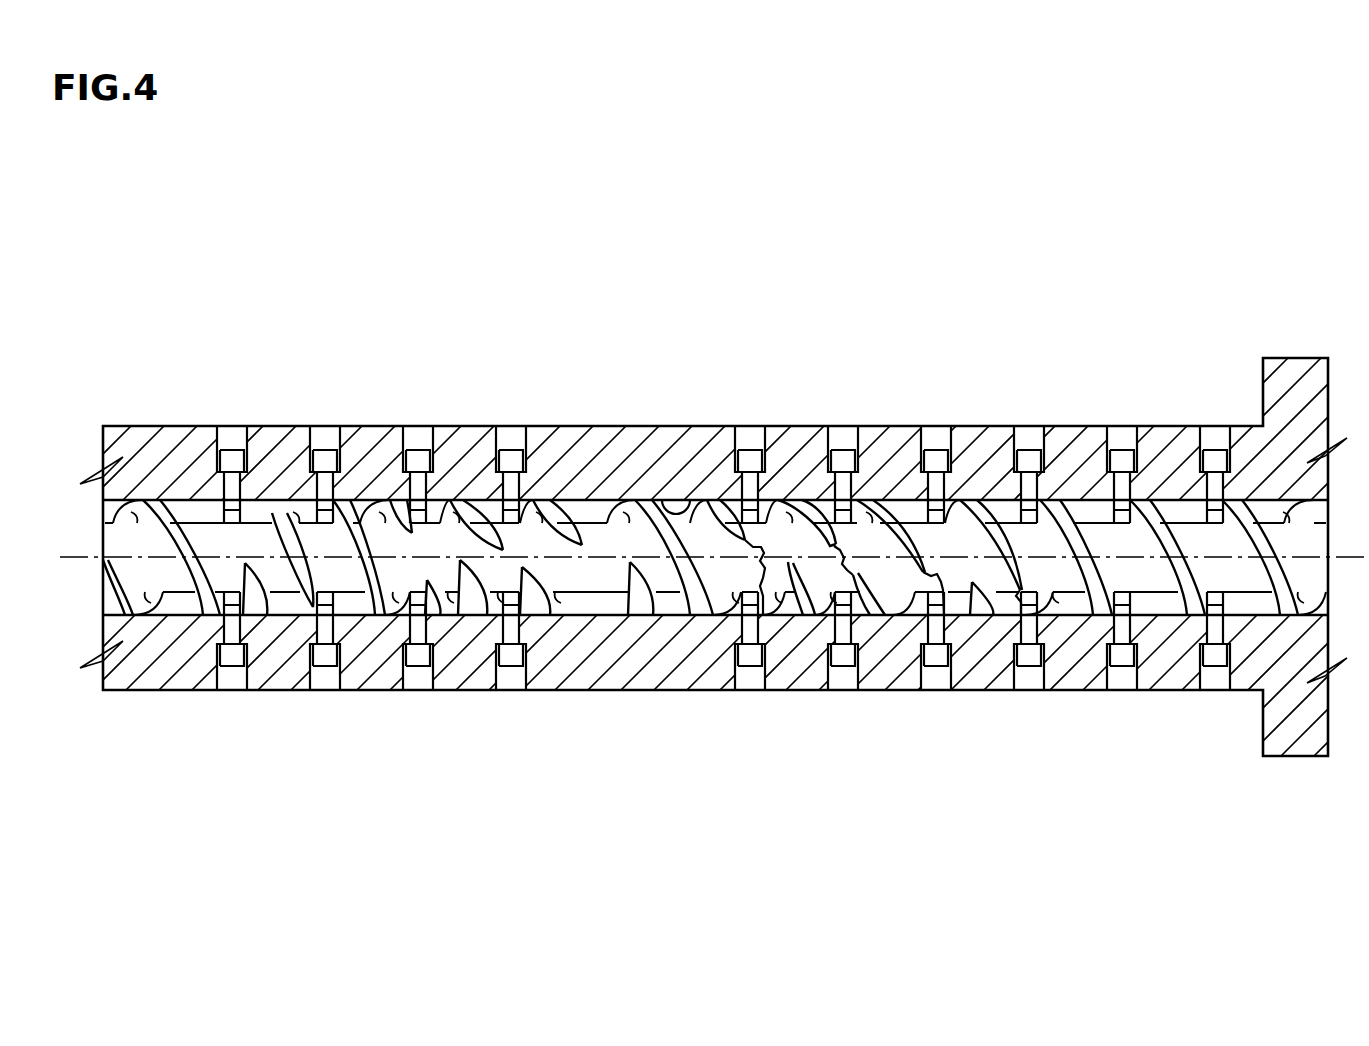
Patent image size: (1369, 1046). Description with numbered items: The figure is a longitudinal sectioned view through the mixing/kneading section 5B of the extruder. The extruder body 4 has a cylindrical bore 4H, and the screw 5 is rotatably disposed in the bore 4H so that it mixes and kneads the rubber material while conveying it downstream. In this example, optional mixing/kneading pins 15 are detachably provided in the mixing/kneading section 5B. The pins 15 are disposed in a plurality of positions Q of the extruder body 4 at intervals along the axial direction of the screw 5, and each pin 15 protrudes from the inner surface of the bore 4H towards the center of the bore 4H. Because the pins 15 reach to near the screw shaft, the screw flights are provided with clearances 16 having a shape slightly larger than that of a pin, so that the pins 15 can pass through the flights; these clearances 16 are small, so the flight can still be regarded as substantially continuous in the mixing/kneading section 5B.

The extruder body 4 is at (573, 460).
The screw 5 is at (595, 548).
The cylindrical bore 4H is at (690, 500).
The mixing/kneading pins 15 is at (1030, 500).
The clearances 16 is at (767, 548).
The mixing/kneading section 5B is at (1090, 343).
The positions Q is at (756, 708).